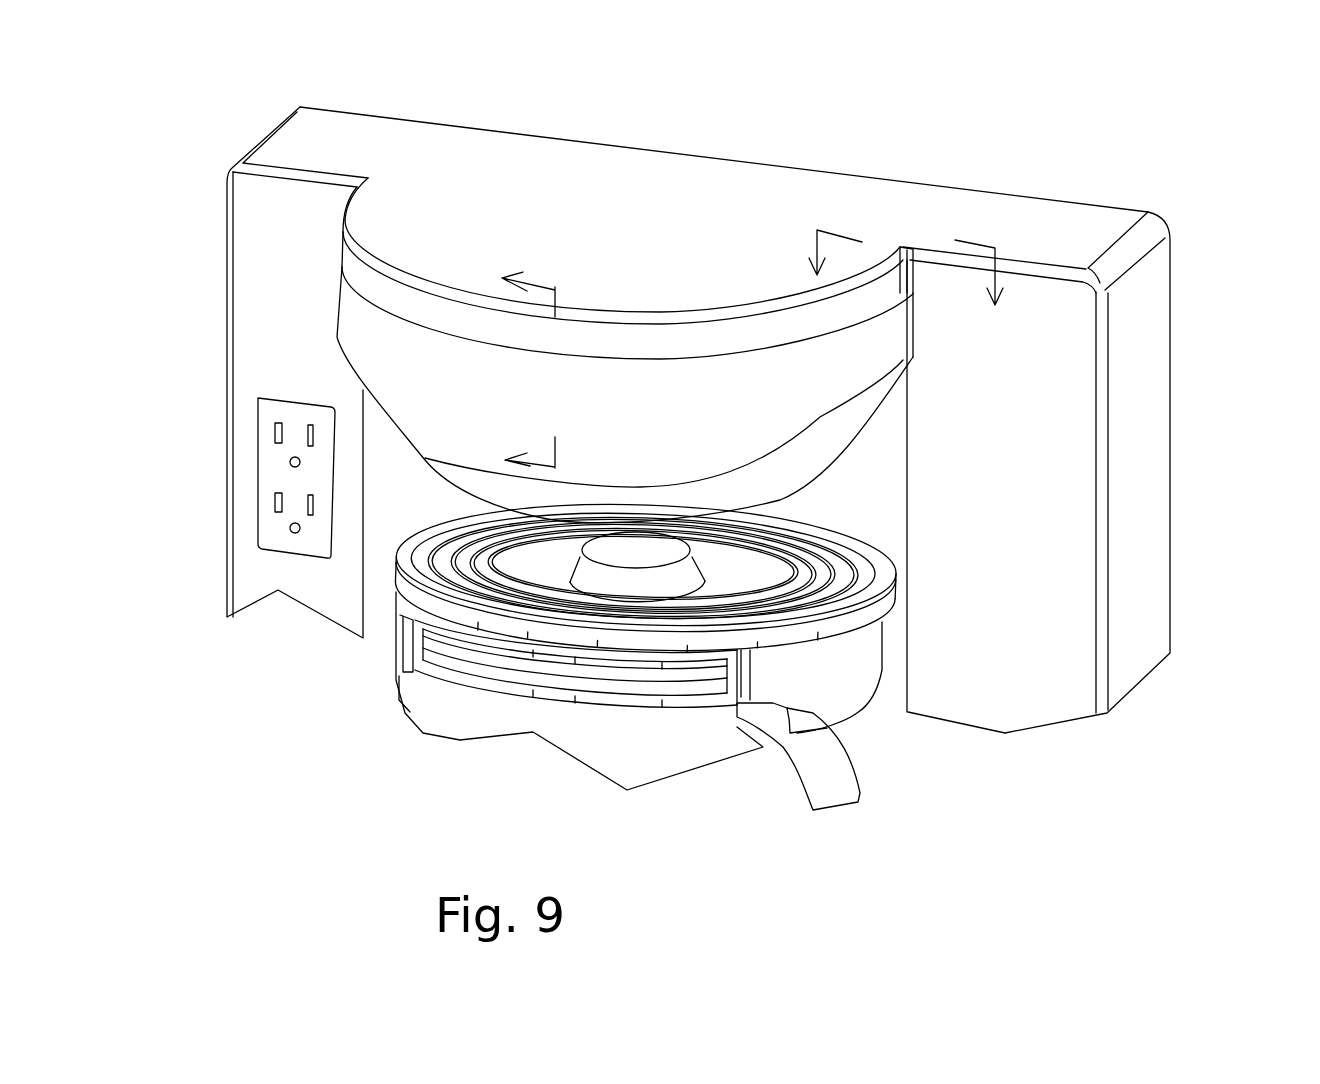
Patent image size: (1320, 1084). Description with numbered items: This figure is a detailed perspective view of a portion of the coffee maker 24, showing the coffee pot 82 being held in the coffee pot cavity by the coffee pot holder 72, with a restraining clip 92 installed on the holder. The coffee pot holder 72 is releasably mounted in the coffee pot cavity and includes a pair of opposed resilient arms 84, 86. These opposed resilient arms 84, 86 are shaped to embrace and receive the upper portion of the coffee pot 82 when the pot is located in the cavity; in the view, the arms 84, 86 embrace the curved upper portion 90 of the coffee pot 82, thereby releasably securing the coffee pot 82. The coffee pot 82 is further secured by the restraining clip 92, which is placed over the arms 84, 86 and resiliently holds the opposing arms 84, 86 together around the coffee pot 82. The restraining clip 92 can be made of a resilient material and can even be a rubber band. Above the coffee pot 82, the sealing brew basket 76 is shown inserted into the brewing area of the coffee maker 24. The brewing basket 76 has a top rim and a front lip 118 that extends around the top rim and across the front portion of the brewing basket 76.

The coffee maker 24 is at (622, 118).
The sealing brew basket 76 is at (365, 350).
The front lip 118 is at (887, 312).
The coffee pot holder 72 is at (870, 625).
The curved upper portion 90 is at (877, 612).
The restraining clip 92 is at (478, 690).
The resilient arm 84 is at (402, 607).
The coffee pot 82 is at (410, 698).
The resilient arm 86 is at (830, 653).